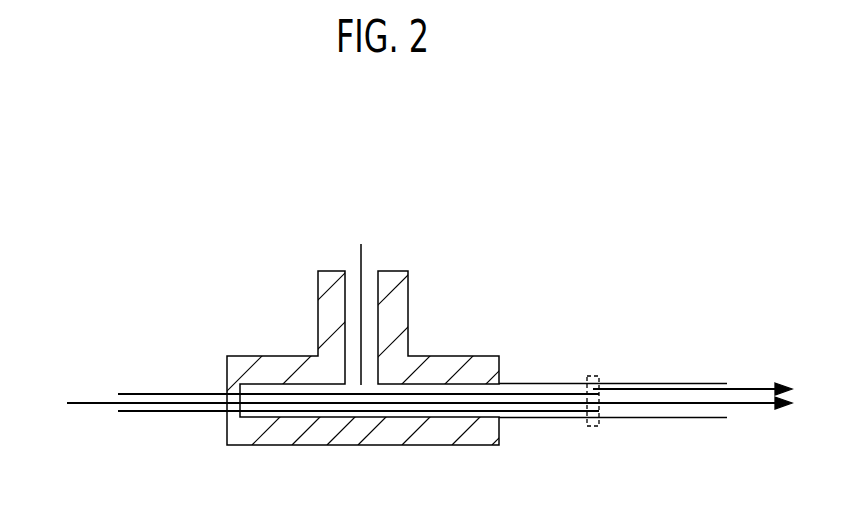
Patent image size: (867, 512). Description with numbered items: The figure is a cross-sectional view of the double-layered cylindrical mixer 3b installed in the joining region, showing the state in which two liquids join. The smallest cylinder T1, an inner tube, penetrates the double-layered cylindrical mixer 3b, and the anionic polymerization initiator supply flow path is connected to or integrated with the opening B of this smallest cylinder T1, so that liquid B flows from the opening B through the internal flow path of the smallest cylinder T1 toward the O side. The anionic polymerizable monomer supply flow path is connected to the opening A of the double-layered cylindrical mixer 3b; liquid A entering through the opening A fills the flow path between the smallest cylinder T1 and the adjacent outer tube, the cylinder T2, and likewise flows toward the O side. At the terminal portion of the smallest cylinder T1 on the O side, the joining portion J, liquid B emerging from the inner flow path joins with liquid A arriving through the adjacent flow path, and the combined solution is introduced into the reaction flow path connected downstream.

The double-layered cylindrical mixer 3b is at (324, 318).
The opening A is at (359, 296).
The opening B is at (404, 403).
The smallest cylinder T1 is at (188, 412).
The cylinder T2 is at (518, 418).
The joining portion J is at (592, 376).
The O side O is at (798, 402).